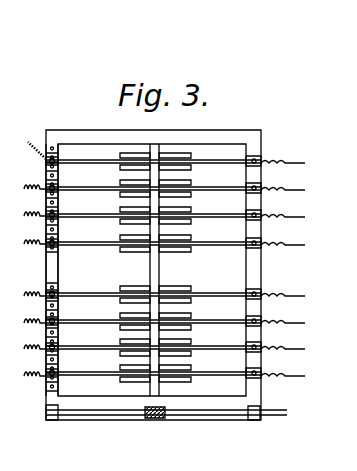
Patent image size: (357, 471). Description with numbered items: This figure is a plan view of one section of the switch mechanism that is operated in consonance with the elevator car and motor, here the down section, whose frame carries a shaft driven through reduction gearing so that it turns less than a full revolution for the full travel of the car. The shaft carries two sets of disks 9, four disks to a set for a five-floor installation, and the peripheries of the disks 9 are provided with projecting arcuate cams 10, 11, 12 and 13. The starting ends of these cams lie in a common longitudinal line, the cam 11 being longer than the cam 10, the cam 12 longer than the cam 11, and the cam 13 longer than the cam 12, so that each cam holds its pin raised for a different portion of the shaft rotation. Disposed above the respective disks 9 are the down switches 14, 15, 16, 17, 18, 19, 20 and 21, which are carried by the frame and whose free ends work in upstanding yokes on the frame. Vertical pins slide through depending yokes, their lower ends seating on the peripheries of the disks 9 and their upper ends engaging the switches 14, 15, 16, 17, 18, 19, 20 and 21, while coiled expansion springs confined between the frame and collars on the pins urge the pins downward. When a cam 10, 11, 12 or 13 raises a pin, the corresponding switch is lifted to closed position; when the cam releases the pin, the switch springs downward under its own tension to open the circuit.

The disks 9 is at (173, 247).
The arcuate cam 10 is at (120, 247).
The arcuate cam 11 is at (120, 219).
The arcuate cam 12 is at (120, 192).
The arcuate cam 13 is at (120, 165).
The switch 14 is at (217, 372).
The switch 15 is at (217, 345).
The switch 16 is at (217, 319).
The switch 17 is at (217, 292).
The switch 18 is at (217, 241).
The switch 19 is at (217, 213).
The switch 20 is at (217, 186).
The switch 21 is at (217, 159).